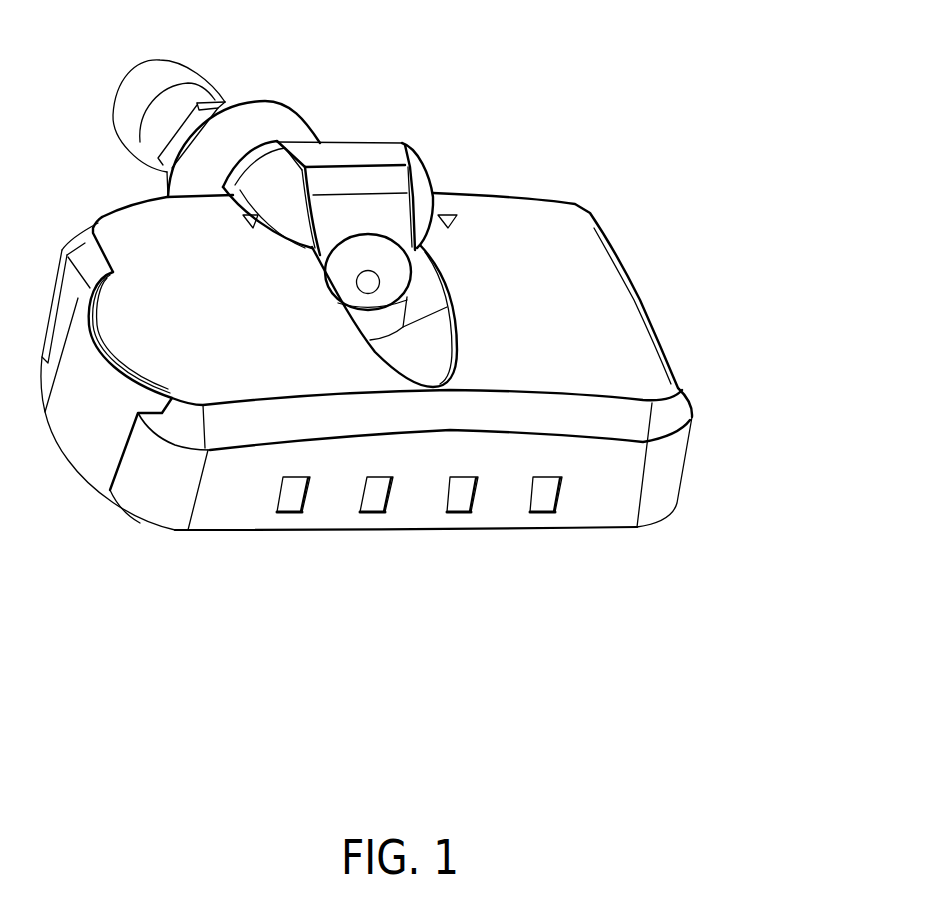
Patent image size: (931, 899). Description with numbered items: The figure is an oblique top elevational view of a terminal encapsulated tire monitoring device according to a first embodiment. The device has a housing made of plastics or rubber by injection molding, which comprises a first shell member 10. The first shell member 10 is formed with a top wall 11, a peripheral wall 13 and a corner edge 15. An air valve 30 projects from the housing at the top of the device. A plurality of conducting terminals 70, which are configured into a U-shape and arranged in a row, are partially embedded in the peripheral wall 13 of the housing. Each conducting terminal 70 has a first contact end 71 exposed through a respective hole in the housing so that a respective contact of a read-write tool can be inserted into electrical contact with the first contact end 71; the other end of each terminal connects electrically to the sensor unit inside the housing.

The first shell member 10 is at (408, 359).
The top wall 11 is at (527, 260).
The peripheral wall 13 is at (235, 502).
The corner edge 15 is at (580, 413).
The air valve 30 is at (227, 98).
The conducting terminals 70 is at (440, 581).
The first contact end 71 is at (540, 498).